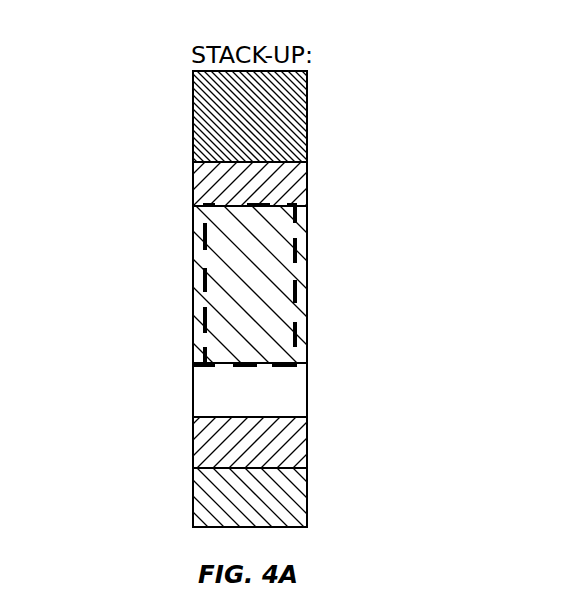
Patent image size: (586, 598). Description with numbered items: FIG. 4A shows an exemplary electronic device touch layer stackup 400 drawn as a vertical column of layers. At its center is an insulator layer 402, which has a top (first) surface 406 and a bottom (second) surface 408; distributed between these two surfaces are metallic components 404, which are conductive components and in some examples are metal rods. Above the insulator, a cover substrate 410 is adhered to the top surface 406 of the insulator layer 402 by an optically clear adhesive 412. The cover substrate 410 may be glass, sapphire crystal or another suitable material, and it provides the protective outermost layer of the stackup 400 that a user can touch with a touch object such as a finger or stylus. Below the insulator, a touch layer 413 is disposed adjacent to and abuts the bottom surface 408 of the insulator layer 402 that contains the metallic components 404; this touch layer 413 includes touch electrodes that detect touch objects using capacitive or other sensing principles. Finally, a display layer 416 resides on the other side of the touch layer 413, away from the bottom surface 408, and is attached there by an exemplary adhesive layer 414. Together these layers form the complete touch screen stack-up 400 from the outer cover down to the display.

The electronic device touch layer stackup 400 is at (138, 24).
The cover substrate 410 is at (306, 120).
The optically clear adhesive 412 is at (200, 185).
The top surface 406 is at (306, 210).
The insulator layer 402 is at (306, 287).
The metallic components 404 is at (200, 280).
The bottom surface 408 is at (306, 365).
The touch layer 413 is at (200, 392).
The adhesive layer 414 is at (200, 443).
The display layer 416 is at (200, 498).